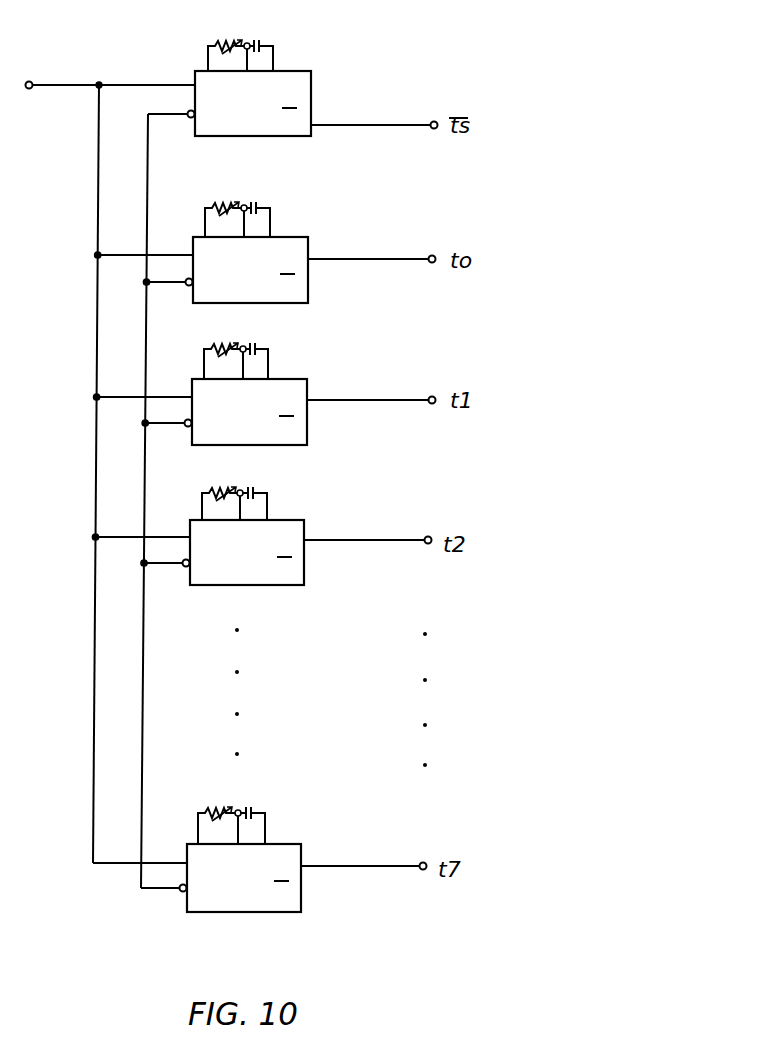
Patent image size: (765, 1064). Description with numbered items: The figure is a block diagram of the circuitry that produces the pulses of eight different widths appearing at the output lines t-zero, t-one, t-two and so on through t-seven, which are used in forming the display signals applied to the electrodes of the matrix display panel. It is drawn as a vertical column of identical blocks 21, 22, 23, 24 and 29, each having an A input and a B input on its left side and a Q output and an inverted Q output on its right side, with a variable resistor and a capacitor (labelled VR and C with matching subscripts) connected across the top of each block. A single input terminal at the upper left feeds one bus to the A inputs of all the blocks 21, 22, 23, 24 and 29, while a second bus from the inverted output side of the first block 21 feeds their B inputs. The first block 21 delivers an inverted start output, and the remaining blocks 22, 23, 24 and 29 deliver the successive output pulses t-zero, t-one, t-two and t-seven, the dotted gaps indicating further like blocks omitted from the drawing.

The monostable multivibrator (start timing) 21 is at (258, 113).
The monostable multivibrator (t0) 22 is at (256, 279).
The monostable multivibrator (t1) 23 is at (255, 421).
The monostable multivibrator (t2) 24 is at (253, 562).
The monostable multivibrator (t7) 29 is at (250, 886).